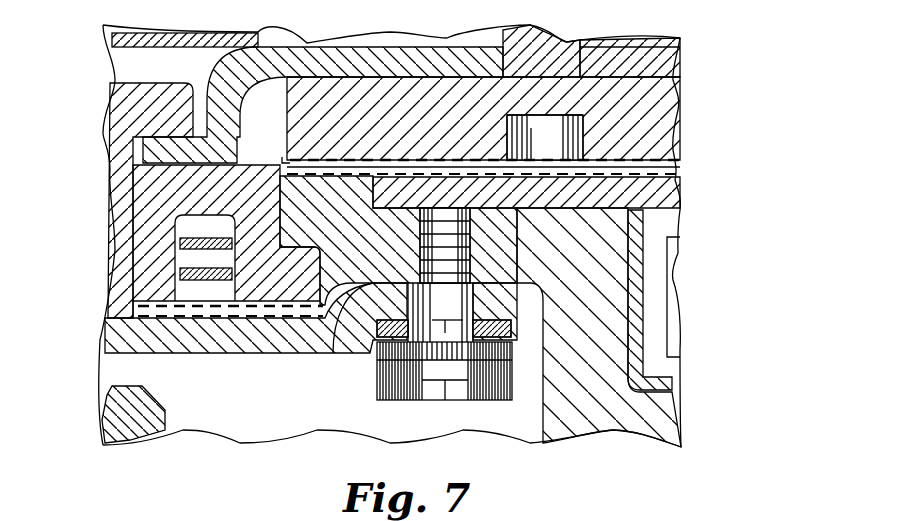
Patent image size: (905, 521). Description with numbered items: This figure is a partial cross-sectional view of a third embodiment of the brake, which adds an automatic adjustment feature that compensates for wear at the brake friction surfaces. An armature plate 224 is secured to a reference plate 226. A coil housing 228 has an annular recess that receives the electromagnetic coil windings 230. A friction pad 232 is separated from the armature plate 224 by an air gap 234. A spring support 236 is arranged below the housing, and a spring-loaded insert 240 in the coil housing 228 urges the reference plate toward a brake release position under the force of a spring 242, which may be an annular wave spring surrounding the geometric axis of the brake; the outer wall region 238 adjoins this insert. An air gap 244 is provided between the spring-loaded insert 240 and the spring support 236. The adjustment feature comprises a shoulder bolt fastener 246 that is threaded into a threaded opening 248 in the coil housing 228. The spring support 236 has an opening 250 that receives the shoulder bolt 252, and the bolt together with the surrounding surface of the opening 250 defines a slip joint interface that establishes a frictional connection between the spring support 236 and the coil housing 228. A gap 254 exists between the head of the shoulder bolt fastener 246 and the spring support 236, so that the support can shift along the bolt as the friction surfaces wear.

The armature plate 224 is at (660, 142).
The reference plate 226 is at (630, 63).
The coil housing 228 is at (613, 297).
The electromagnetic coil windings 230 is at (672, 322).
The friction pad 232 is at (630, 198).
The air gap 234 is at (607, 175).
The spring support 236 is at (152, 335).
The outer wall 238 is at (127, 202).
The spring-loaded insert 240 is at (153, 233).
The spring 242 is at (185, 243).
The air gap 244 is at (212, 313).
The shoulder bolt fastener 246 is at (435, 390).
The threaded opening 248 is at (447, 250).
The opening 250 is at (363, 345).
The shoulder bolt 252 is at (470, 380).
The gap 254 is at (447, 300).